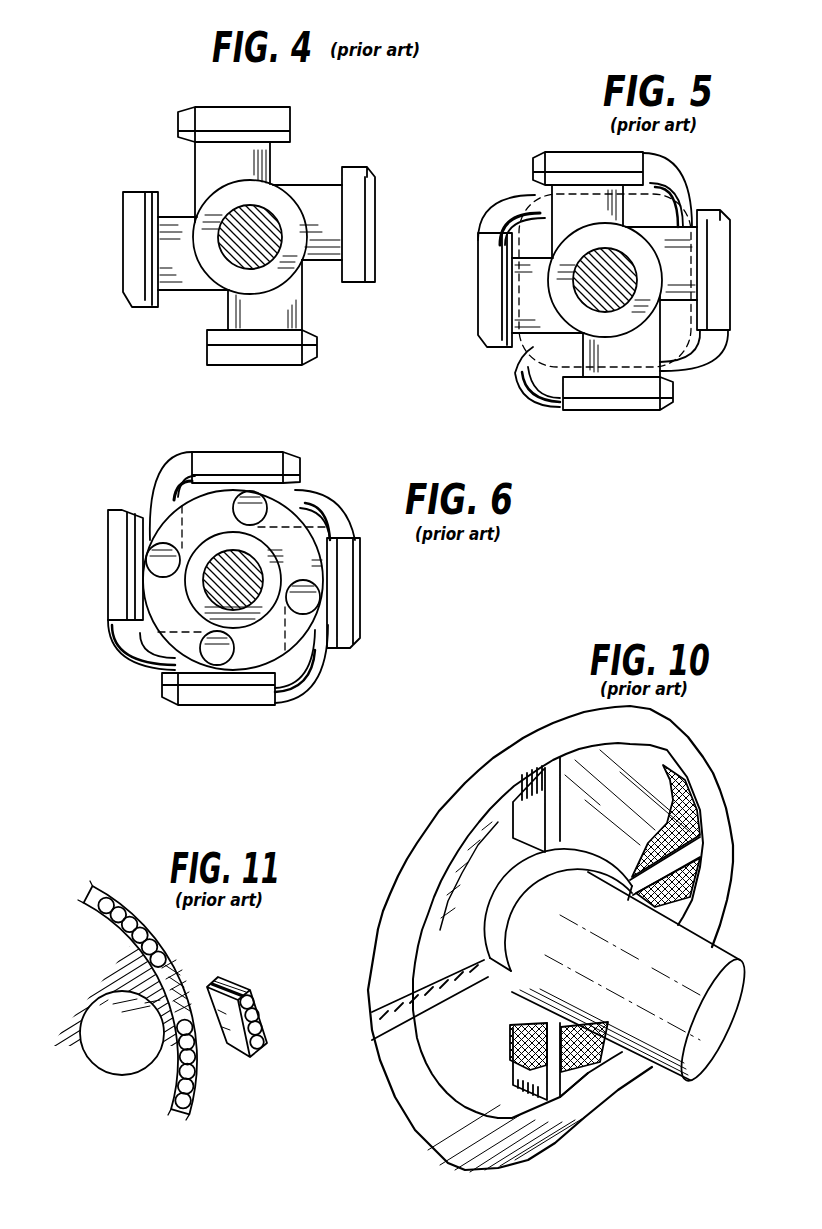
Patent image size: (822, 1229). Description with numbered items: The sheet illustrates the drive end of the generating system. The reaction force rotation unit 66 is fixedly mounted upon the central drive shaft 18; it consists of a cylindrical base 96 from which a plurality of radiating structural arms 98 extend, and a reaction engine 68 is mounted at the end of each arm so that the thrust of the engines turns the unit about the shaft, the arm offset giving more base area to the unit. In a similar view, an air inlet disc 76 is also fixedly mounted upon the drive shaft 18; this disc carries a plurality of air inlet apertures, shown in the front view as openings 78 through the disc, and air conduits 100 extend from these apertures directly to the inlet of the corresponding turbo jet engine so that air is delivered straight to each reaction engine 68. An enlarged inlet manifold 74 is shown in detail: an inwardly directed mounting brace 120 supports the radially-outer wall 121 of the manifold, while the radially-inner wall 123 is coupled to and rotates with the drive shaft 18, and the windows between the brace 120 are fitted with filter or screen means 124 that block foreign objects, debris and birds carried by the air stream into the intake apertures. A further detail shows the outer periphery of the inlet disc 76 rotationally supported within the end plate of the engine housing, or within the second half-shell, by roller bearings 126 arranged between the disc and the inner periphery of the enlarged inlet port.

In FIG. 4, the drive shaft 18 is at (228, 262).
In FIG. 5, the drive shaft 18 is at (630, 257).
In FIG. 6, the drive shaft 18 is at (207, 587).
In FIG. 10, the drive shaft 18 is at (711, 1050).
In FIG. 4, the reaction force rotation unit 66 is at (270, 182).
In FIG. 4, the reaction engine 68 is at (237, 112).
In FIG. 5, the reaction engine 68 is at (583, 150).
In FIG. 6, the reaction engine 68 is at (232, 450).
In FIG. 10, the inlet manifold 74 is at (543, 953).
In FIG. 5, the air inlet disc 76 is at (607, 281).
In FIG. 6, the air inlet disc 76 is at (295, 640).
In FIG. 11, the air inlet disc 76 is at (95, 967).
In FIG. 6, the holes 78 is at (252, 513).
In FIG. 4, the cylindrical base 96 is at (248, 235).
In FIG. 5, the cylindrical base 96 is at (604, 281).
In FIG. 4, the radiating structural arms 98 is at (173, 217).
In FIG. 5, the air conduits 100 is at (683, 168).
In FIG. 6, the air conduits 100 is at (163, 462).
In FIG. 10, the mounting brace 120 is at (520, 795).
In FIG. 10, the radially-outer wall 121 is at (540, 893).
In FIG. 10, the radially-inner wall 123 is at (412, 1092).
In FIG. 10, the filter or screen means 124 is at (702, 814).
In FIG. 11, the roller bearings 126 is at (149, 925).